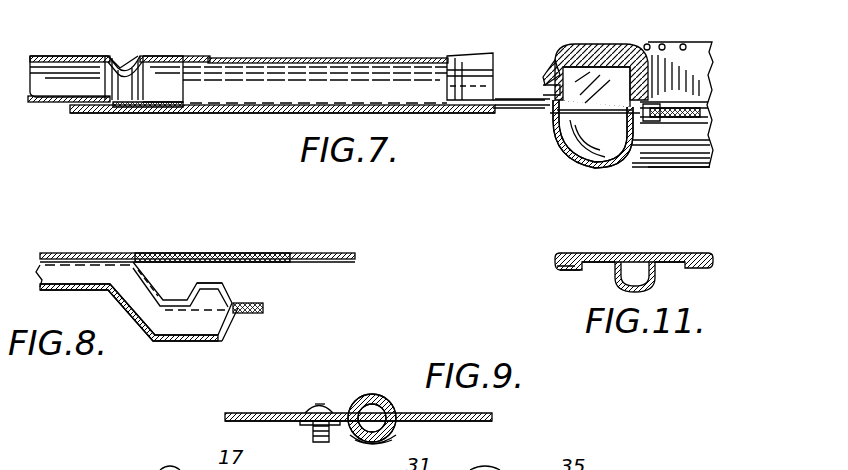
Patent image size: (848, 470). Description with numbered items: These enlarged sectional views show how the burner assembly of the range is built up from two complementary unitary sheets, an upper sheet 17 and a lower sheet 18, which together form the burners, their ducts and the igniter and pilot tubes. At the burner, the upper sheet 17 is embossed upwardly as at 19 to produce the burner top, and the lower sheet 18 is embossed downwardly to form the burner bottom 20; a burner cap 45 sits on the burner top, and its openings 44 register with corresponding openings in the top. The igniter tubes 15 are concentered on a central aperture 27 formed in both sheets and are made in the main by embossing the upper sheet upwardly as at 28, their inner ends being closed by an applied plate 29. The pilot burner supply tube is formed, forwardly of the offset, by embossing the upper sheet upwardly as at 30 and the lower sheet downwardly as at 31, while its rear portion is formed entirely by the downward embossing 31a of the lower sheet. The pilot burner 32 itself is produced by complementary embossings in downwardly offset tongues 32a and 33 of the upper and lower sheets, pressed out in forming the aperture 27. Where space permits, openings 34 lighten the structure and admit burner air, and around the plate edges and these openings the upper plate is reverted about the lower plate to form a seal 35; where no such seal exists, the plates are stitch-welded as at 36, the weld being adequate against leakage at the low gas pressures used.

In FIG. 7, the igniter tubes 15 is at (306, 64).
In FIG. 7, the upper sheet 17 is at (522, 100).
In FIG. 8, the upper sheet 17 is at (322, 254).
In FIG. 11, the upper sheet 17 is at (682, 254).
In FIG. 9, the upper sheet 17 is at (492, 412).
In FIG. 7, the lower sheet 18 is at (437, 113).
In FIG. 8, the lower sheet 18 is at (325, 262).
In FIG. 11, the lower sheet 18 is at (665, 268).
In FIG. 9, the lower sheet 18 is at (470, 424).
In FIG. 7, the upward embossing of upper sheet 19 is at (560, 68).
In FIG. 7, the burner bottom 20 is at (573, 168).
In FIG. 8, the aperture 27 is at (243, 253).
In FIG. 7, the upward embossing forming igniter tubes 28 is at (372, 58).
In FIG. 7, the applied plate 29 is at (90, 57).
In FIG. 9, the upward embossing of upper sheet for pilot tube 30 is at (376, 394).
In FIG. 9, the downward embossing of lower sheet for pilot tube 31 is at (358, 436).
In FIG. 8, the downward embossing forming rear pilot tube portion 31a is at (112, 292).
In FIG. 11, the downward embossing forming rear pilot tube portion 31a is at (620, 280).
In FIG. 8, the pilot burner 32 is at (236, 290).
In FIG. 8, the tongue of upper sheet 32a is at (188, 272).
In FIG. 8, the tongue of lower sheet 33 is at (160, 342).
In FIG. 7, the openings 34 is at (700, 110).
In FIG. 7, the reverted edge seal 35 is at (643, 121).
In FIG. 11, the reverted edge seal 35 is at (562, 272).
In FIG. 8, the stitch weld 36 is at (248, 314).
In FIG. 7, the openings in burner cap 44 is at (634, 48).
In FIG. 7, the burner cap 45 is at (607, 42).
In FIG. 8, the element weld is at (262, 310).